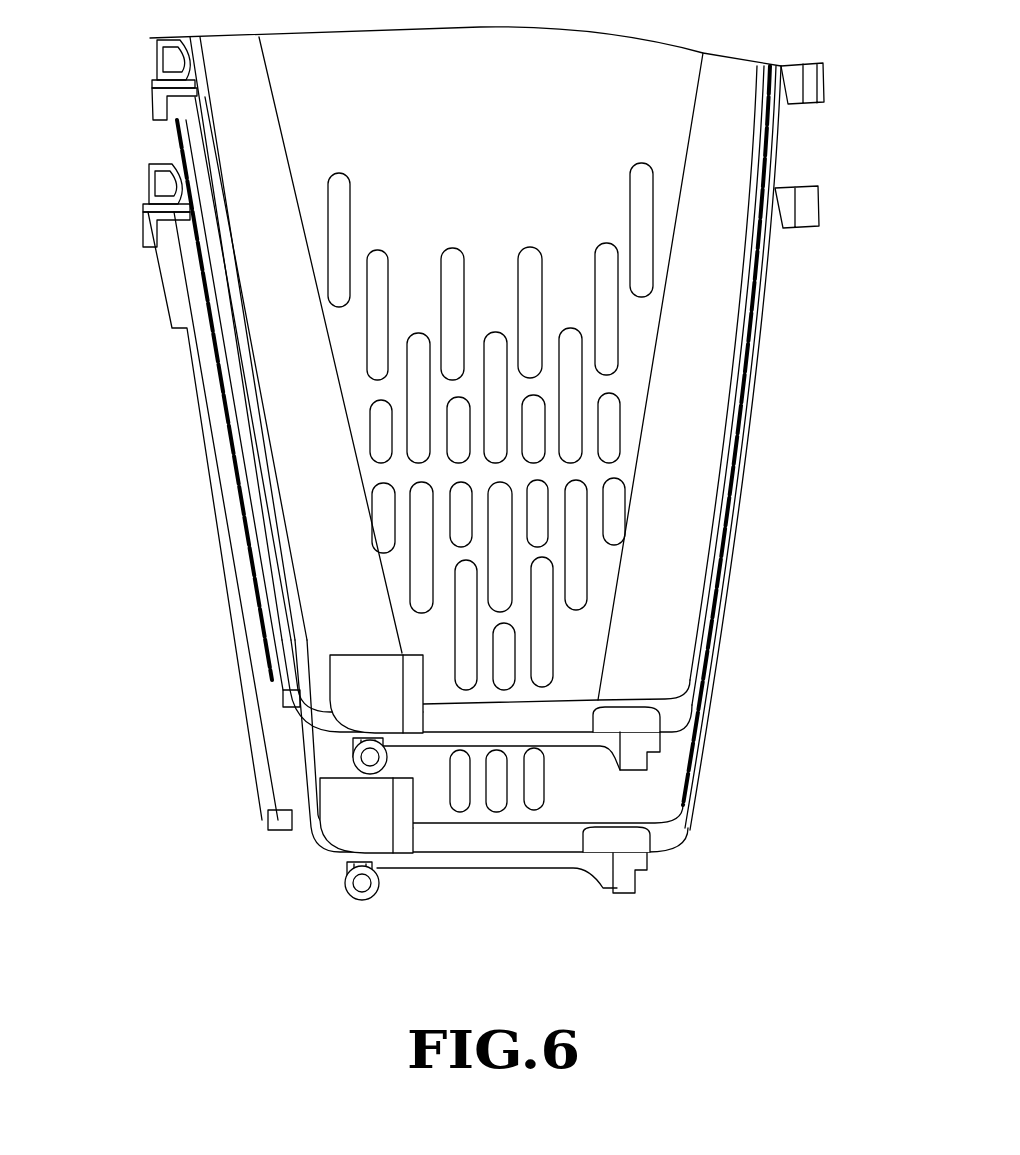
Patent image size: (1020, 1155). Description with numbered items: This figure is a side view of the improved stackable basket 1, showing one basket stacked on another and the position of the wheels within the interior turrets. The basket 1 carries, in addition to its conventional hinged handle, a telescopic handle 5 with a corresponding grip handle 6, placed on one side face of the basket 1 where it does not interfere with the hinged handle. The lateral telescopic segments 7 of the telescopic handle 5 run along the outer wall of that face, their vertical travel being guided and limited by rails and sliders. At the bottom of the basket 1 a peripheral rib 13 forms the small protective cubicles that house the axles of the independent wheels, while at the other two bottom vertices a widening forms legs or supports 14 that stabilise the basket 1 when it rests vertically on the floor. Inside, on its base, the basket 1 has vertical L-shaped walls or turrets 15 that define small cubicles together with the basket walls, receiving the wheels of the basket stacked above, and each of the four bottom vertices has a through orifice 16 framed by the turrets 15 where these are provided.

The basket 1 is at (783, 593).
The telescopic handle 5 is at (165, 350).
The handle 6 is at (157, 187).
The lateral telescopic segments 7 is at (242, 560).
The peripheral rib 13 is at (482, 868).
The legs or supports 14 is at (627, 878).
The vertical L-shaped walls or turrets 15 is at (360, 827).
The through orifice 16 is at (617, 840).